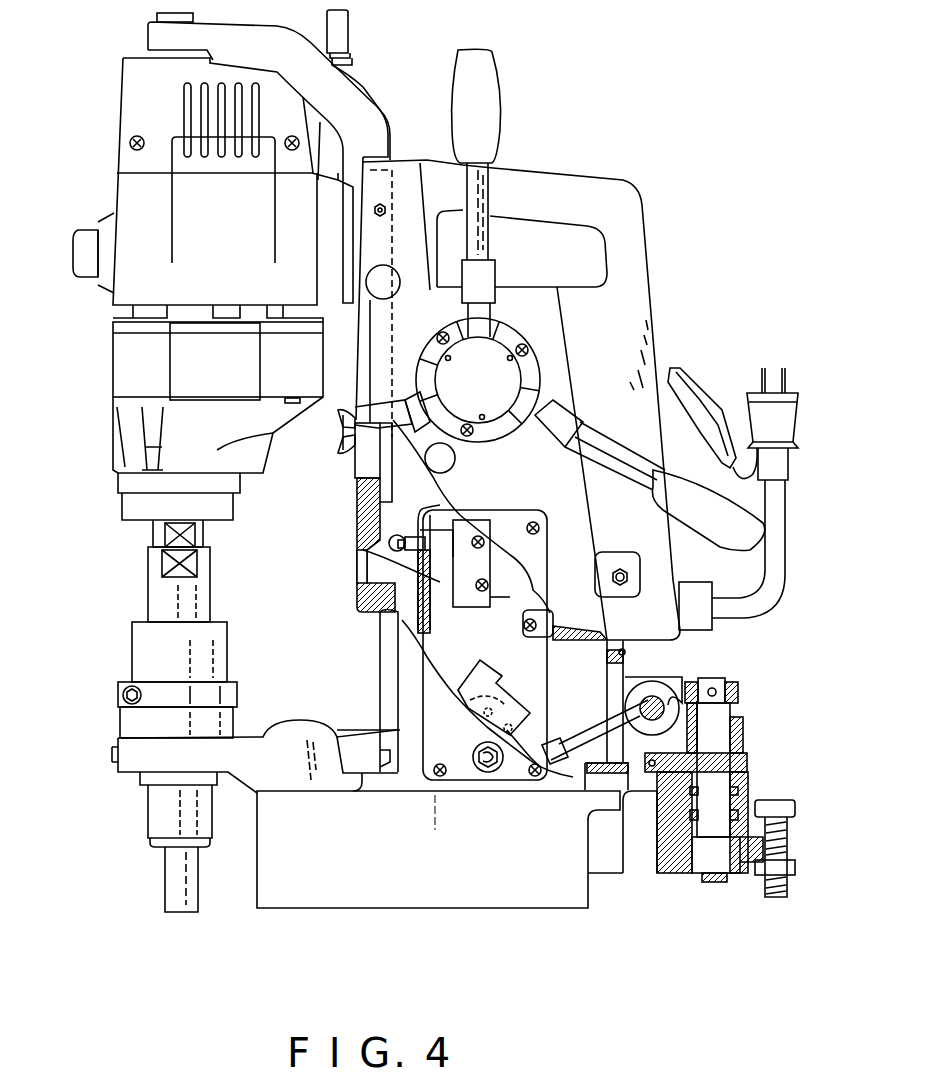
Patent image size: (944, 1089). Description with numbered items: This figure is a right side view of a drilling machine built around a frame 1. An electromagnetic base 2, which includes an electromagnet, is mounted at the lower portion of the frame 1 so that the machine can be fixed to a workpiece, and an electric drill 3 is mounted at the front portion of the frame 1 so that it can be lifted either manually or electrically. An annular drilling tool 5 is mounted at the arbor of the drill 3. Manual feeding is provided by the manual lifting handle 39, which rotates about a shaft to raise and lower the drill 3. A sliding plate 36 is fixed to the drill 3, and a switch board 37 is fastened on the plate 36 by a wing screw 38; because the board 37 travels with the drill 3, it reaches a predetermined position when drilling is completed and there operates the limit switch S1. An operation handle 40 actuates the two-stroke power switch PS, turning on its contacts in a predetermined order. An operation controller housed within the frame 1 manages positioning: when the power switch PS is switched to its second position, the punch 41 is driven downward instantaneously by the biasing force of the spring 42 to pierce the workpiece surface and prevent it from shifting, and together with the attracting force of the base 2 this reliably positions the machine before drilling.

The frame 1 is at (653, 323).
The electromagnetic base 2 is at (385, 887).
The electric drill 3 is at (122, 355).
The annular drilling tool 5 is at (173, 893).
The sliding plate 36 is at (355, 508).
The switch board 37 is at (373, 458).
The wing screw 38 is at (340, 445).
The manual lifting handle 39 is at (477, 205).
The operation handle 40 is at (367, 747).
The punch 41 is at (715, 877).
The spring 42 is at (748, 793).
The limit switch S1 is at (385, 553).
The two-stroke power switch PS is at (475, 681).